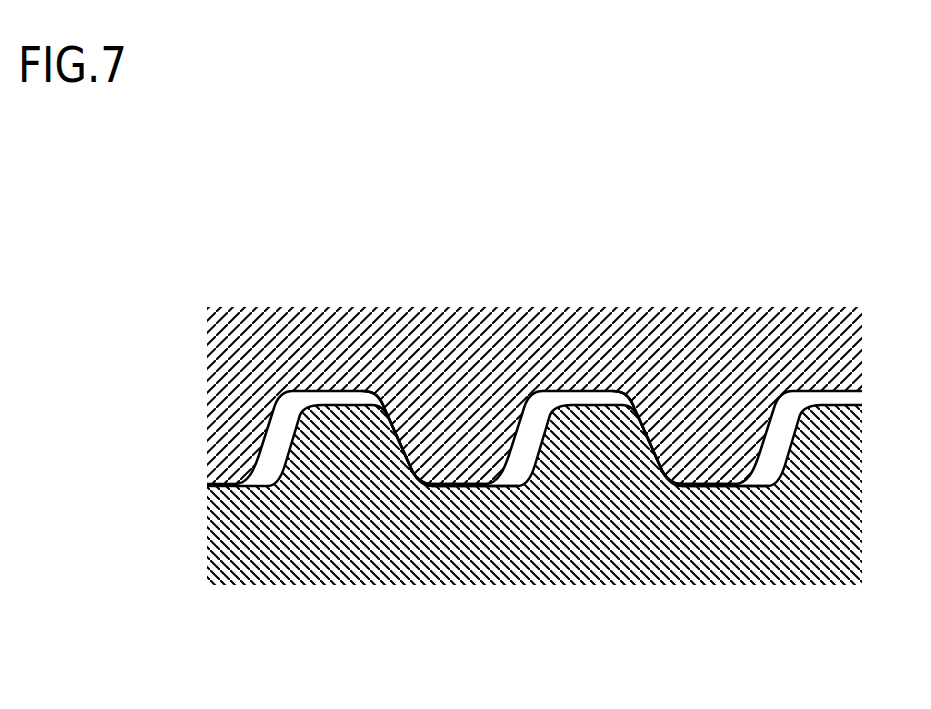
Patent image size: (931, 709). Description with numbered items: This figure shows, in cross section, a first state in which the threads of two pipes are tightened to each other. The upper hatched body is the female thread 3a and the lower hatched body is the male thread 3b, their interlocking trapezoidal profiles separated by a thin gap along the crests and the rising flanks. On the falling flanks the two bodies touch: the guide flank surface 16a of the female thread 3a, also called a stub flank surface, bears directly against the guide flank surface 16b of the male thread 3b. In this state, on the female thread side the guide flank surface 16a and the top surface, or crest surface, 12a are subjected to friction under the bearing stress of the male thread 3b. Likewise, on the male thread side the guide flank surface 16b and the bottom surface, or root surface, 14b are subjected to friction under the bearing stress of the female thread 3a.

The female thread 3a is at (542, 299).
The male thread 3b is at (540, 587).
The guide flank surface 16a is at (402, 455).
The guide flank surface 16b is at (394, 433).
The top surface 12a is at (439, 486).
The bottom surface 14b is at (475, 487).